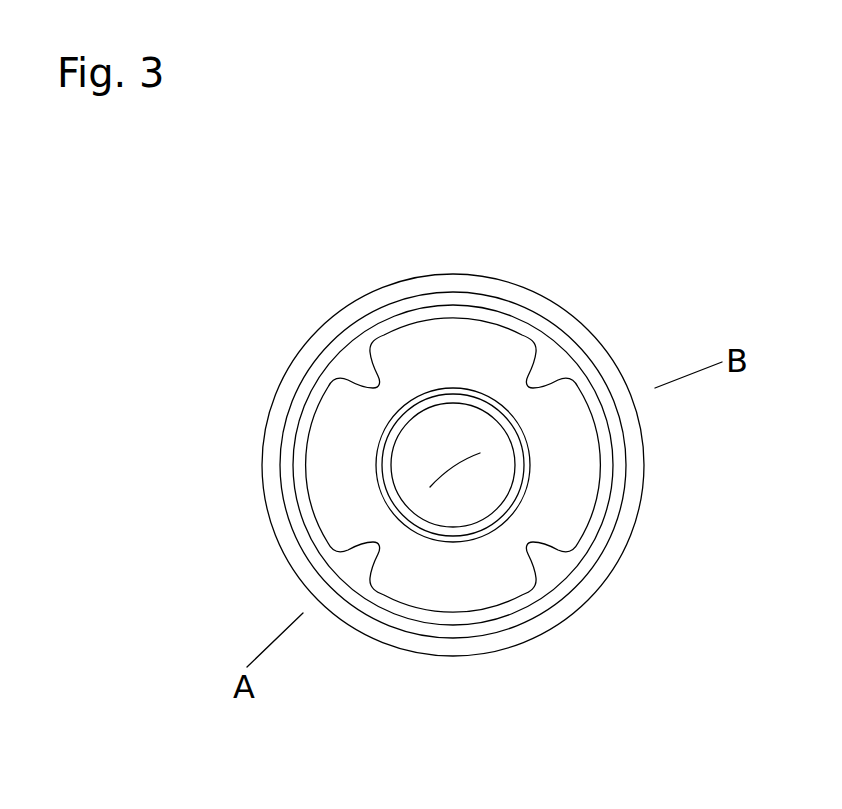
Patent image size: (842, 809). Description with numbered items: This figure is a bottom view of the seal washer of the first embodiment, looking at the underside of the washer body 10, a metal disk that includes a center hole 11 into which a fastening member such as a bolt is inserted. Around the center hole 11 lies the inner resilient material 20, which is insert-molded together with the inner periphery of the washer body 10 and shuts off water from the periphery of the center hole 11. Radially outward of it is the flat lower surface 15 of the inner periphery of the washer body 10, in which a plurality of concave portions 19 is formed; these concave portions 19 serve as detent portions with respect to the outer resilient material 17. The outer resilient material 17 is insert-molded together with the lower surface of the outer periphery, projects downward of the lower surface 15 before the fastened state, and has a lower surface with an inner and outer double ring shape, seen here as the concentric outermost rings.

The washer body 10 is at (573, 465).
The center hole 11 is at (453, 353).
The lower surface of the inner periphery 15 is at (453, 531).
The outer resilient material 17 is at (516, 467).
The concave portions 19 is at (474, 522).
The inner resilient material 20 is at (349, 437).